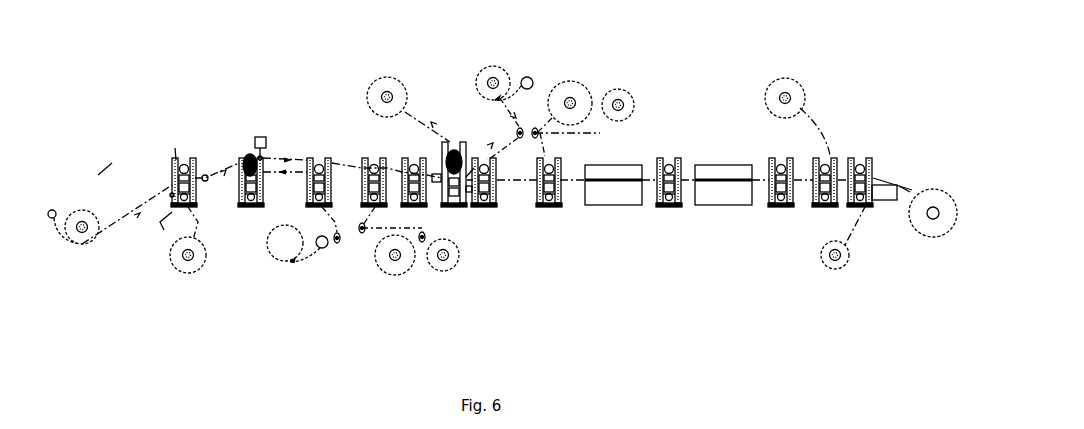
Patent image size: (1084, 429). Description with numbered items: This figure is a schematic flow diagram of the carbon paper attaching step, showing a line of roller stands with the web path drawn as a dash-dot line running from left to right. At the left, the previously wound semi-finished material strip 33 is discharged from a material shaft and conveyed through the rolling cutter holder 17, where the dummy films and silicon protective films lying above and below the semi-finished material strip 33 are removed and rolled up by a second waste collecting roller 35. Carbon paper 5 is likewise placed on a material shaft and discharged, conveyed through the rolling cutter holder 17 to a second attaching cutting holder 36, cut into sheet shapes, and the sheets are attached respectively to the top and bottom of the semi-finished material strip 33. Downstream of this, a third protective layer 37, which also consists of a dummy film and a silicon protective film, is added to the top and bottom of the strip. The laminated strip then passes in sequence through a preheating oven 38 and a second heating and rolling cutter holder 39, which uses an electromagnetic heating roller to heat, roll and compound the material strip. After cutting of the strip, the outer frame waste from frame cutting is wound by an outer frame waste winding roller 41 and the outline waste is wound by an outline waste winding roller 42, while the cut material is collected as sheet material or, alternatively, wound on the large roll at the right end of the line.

The carbon paper 5 is at (481, 68).
The rolling cutter holder 17 is at (172, 173).
The semi-finished material strip 33 is at (80, 224).
The second waste collecting roller 35 is at (385, 95).
The second attaching cutting holder 36 is at (250, 160).
The third protective layer 37 is at (618, 92).
The preheating oven 38 is at (613, 206).
The second heating and rolling cutter holder 39 is at (665, 162).
The outer frame waste winding roller 41 is at (781, 84).
The outline waste winding roller 42 is at (832, 256).